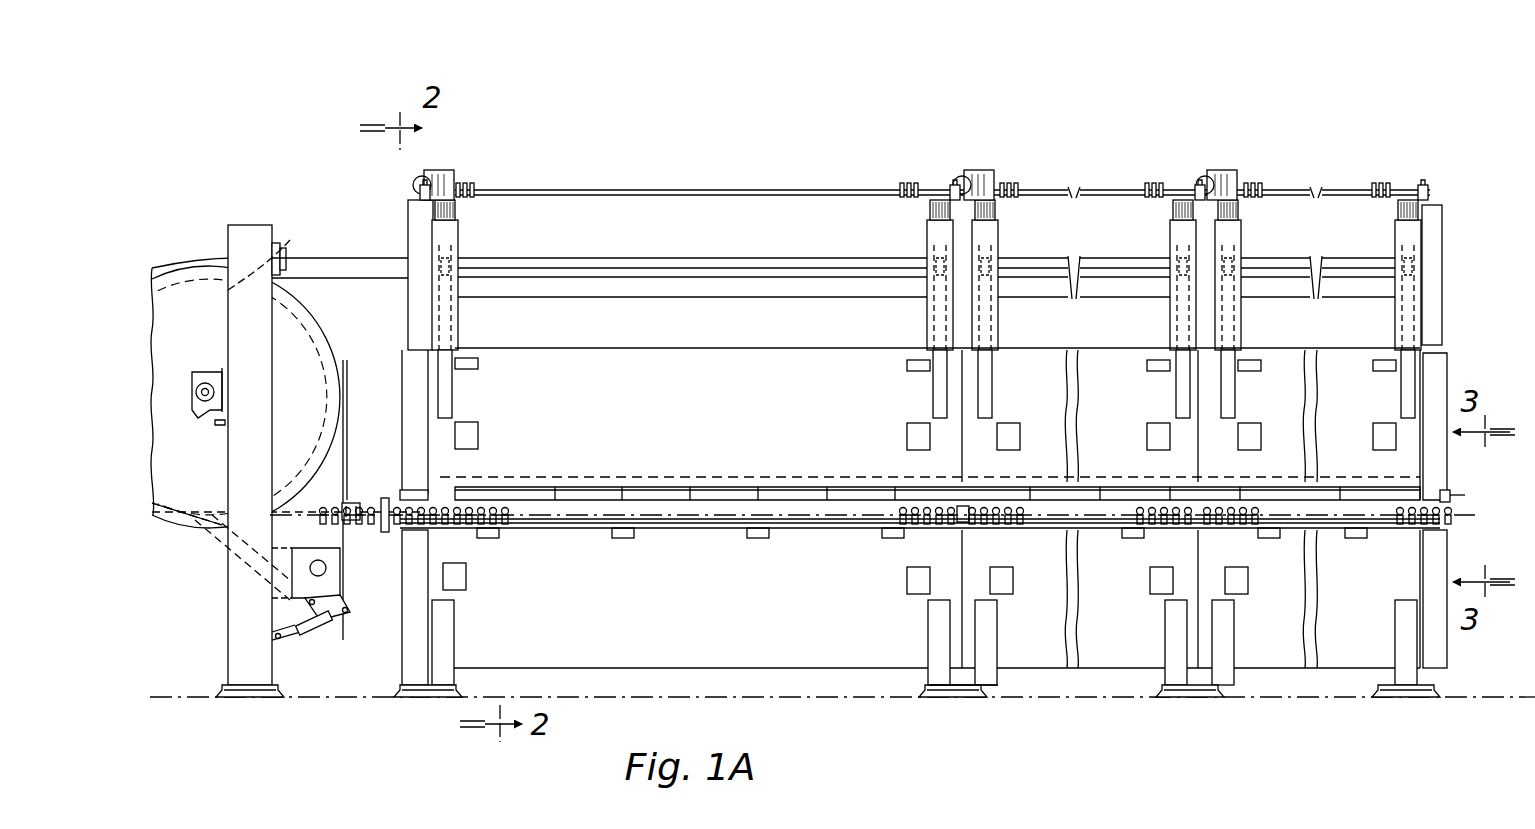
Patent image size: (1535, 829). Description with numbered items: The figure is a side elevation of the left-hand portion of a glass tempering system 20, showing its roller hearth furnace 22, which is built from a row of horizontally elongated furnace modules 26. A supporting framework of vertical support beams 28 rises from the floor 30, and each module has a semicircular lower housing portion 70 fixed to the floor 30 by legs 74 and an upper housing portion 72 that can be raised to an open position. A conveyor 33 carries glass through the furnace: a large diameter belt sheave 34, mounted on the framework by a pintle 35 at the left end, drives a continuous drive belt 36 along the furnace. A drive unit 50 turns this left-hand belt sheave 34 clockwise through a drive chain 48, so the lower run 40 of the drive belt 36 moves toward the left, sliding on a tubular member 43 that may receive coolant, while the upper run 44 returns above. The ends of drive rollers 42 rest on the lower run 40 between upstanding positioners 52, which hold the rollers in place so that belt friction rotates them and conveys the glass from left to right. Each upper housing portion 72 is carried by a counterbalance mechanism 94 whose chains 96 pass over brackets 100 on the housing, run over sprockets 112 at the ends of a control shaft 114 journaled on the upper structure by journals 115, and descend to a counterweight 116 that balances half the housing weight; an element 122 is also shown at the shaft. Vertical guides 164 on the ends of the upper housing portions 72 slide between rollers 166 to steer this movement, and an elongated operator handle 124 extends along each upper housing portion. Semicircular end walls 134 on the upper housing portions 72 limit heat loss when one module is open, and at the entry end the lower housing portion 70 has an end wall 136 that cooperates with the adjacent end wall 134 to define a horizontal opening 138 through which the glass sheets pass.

The glass tempering system 20 is at (1338, 148).
The roller hearth furnace 22 is at (1002, 162).
The furnace modules 26 is at (690, 250).
The vertical support beams 28 is at (240, 318).
The floor 30 is at (806, 692).
The conveyor 33 is at (176, 258).
The belt sheaves 34 is at (203, 258).
The pintles 35 is at (205, 383).
The drive belt 36 is at (205, 524).
The lower runs 40 is at (350, 509).
The drive rollers 42 is at (902, 508).
The tubular members 43 is at (488, 530).
The upper runs 44 is at (274, 250).
The drive chains 48 is at (345, 458).
The drive unit 50 is at (350, 612).
The positioners 52 is at (494, 508).
The lower housing portion 70 is at (646, 672).
The upper housing portion 72 is at (626, 354).
The legs 74 is at (455, 622).
The counterbalance mechanism 94 is at (460, 214).
The chains 96 is at (438, 212).
The brackets 100 is at (452, 386).
The sprockets 112 is at (462, 184).
The control shaft 114 is at (668, 190).
The journals 115 is at (420, 192).
The counterweight 116 is at (458, 234).
The gear box 122 is at (438, 172).
The operator handle 124 is at (640, 476).
The end walls 134 is at (412, 400).
The end walls 136 is at (410, 546).
The openings 138 is at (404, 494).
The vertical guides 164 is at (455, 320).
The rollers 166 is at (455, 264).